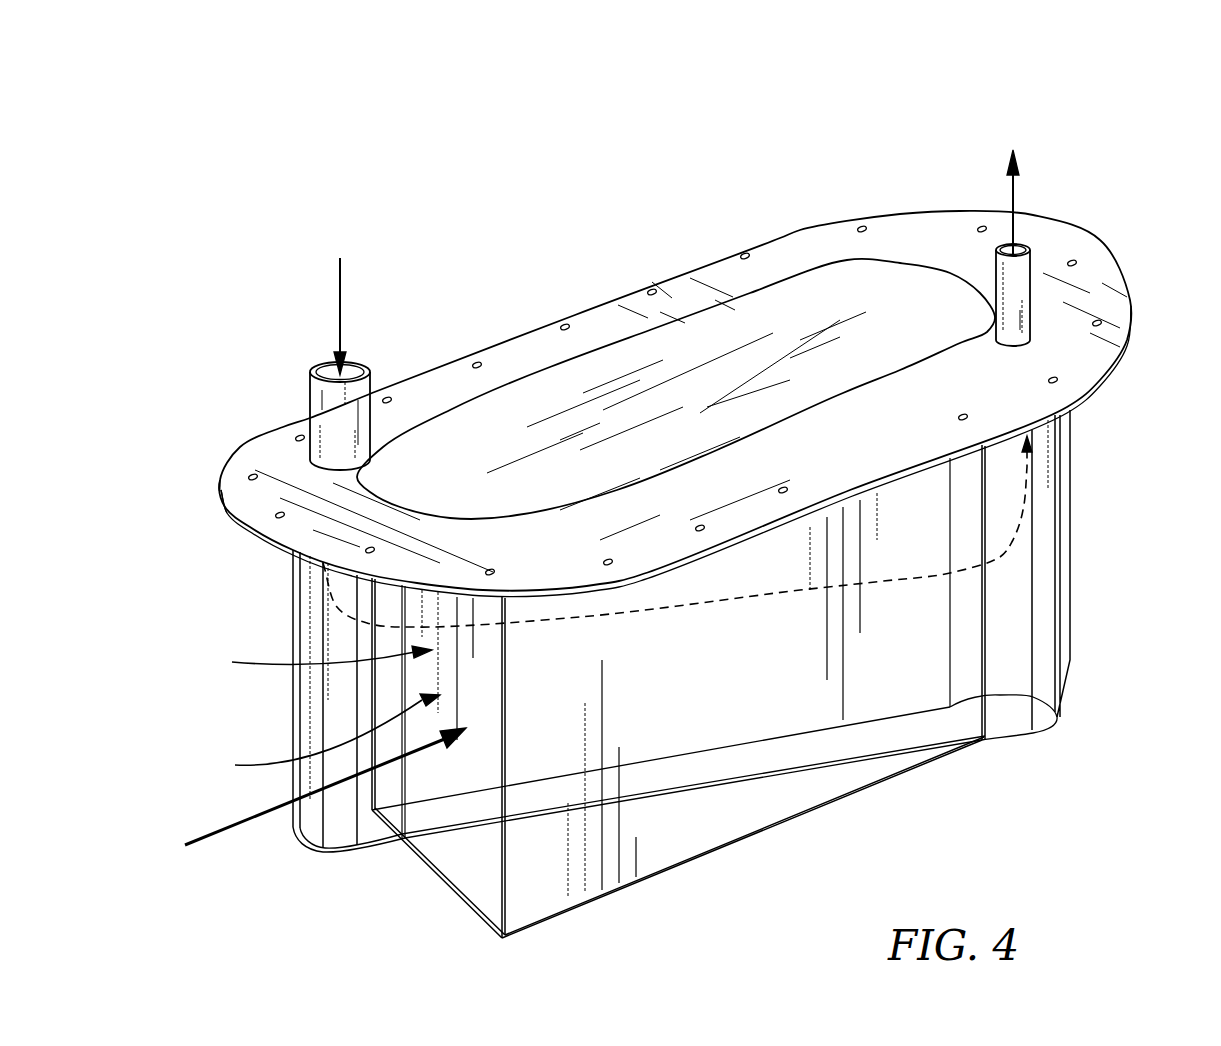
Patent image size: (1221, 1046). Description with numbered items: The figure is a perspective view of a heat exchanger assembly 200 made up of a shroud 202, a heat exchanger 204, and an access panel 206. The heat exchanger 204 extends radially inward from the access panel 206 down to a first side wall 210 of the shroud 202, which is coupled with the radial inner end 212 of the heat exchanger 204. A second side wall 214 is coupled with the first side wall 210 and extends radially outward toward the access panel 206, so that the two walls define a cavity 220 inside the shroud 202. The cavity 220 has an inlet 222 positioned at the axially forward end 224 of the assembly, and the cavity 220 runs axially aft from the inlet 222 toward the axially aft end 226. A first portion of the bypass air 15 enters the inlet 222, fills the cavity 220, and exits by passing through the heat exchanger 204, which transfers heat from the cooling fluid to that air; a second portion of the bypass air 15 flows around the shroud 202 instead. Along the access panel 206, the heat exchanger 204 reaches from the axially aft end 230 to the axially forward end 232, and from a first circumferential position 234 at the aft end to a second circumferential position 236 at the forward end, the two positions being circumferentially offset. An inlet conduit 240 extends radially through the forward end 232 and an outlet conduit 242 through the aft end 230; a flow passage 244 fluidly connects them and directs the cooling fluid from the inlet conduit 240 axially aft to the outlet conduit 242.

The heat exchanger assembly 200 is at (960, 128).
The access panel 206 is at (790, 240).
The axially aft end of the access panel 230 is at (1090, 280).
The axially forward end of the access panel 232 is at (228, 485).
The inlet conduit 240 is at (365, 380).
The outlet conduit 242 is at (1018, 268).
The axially forward end of the heat exchanger assembly 224 is at (240, 446).
The axially aft end of the heat exchanger assembly 226 is at (1068, 225).
The heat exchanger 204 is at (305, 707).
The second circumferential position 236 is at (372, 628).
The radial inner end of the heat exchanger 212 is at (332, 845).
The shroud 202 is at (596, 886).
The first side wall 210 is at (452, 893).
The second side wall 214 is at (752, 830).
The first circumferential position 234 is at (1048, 585).
The flow passage 244 is at (893, 580).
The inlet 222 is at (307, 662).
The cavity 220 is at (311, 737).
The bypass air 15 is at (200, 848).